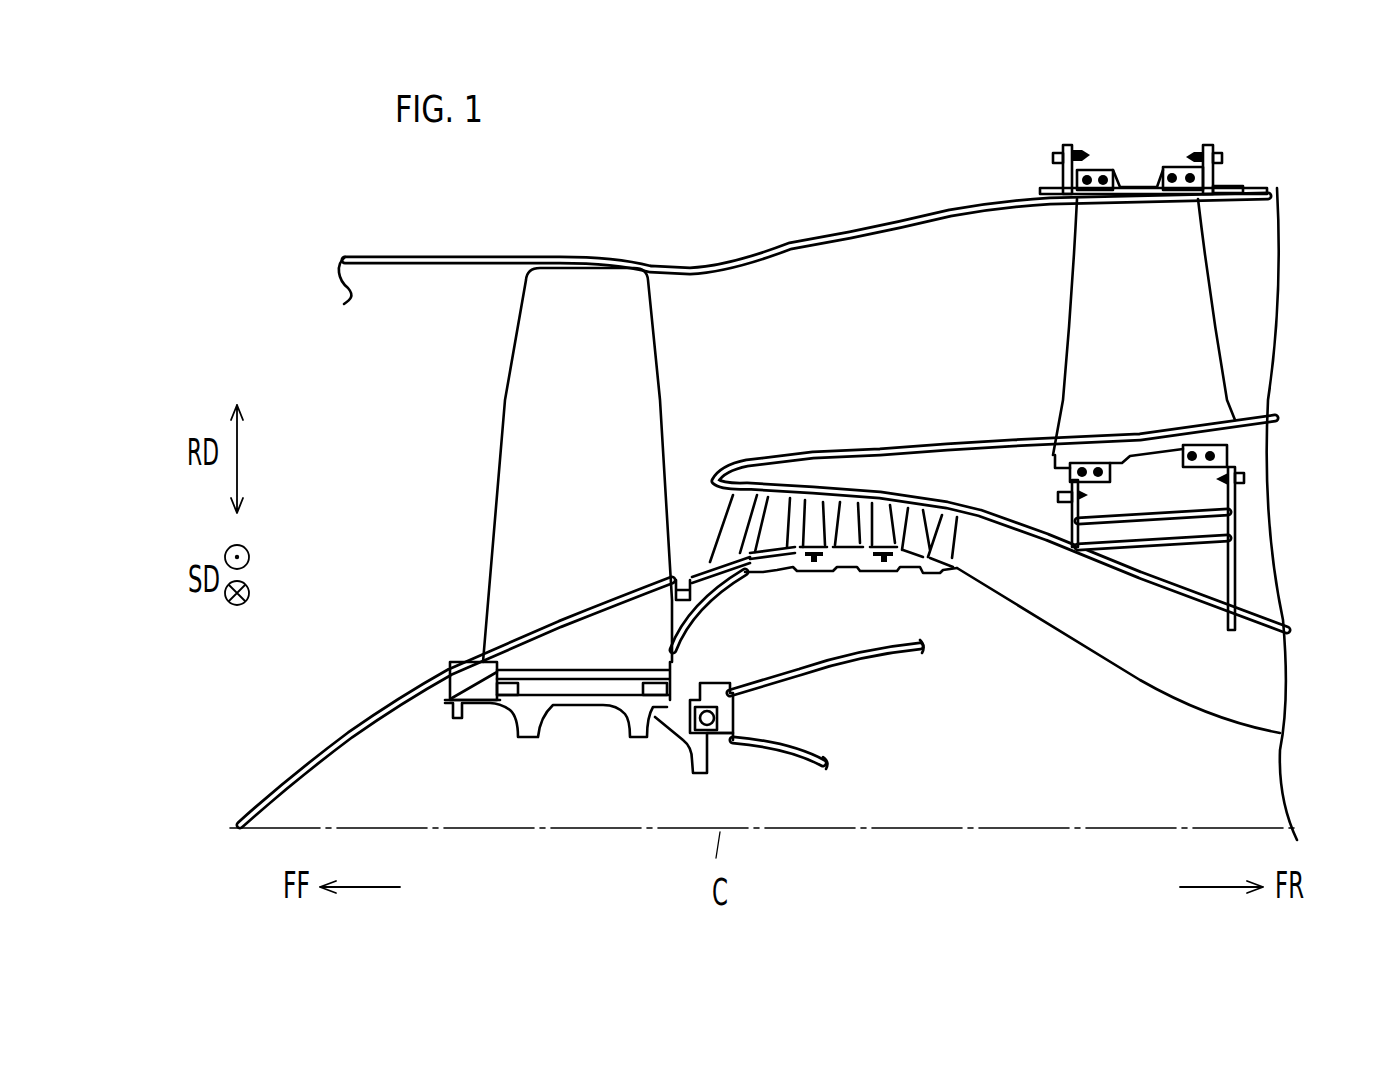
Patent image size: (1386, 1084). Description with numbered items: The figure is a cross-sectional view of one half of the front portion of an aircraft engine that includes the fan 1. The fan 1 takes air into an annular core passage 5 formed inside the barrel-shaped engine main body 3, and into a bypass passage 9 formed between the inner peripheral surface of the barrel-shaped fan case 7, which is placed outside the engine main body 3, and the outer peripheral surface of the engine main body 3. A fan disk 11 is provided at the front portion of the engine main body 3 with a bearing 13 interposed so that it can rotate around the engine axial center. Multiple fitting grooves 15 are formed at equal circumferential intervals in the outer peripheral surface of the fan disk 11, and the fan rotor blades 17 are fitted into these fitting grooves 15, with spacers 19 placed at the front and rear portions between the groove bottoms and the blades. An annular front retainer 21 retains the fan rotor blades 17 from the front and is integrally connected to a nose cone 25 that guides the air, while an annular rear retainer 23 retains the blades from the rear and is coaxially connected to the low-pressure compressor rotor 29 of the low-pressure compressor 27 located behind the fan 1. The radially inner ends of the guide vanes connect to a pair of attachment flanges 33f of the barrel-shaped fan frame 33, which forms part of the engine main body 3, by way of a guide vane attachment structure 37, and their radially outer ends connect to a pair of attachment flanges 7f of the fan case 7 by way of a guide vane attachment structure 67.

The fan 1 is at (399, 500).
The engine main body 3 is at (1000, 440).
The annular core passage 5 is at (993, 583).
The fan case 7 is at (875, 217).
The attachment flanges 7f is at (1062, 178).
The bypass passage 9 is at (963, 260).
The fan disk 11 is at (529, 754).
The bearing 13 is at (715, 720).
The fitting grooves 15 is at (580, 688).
The fan rotor blades 17 is at (493, 439).
The spacers 19 is at (505, 695).
The front retainer 21 is at (440, 677).
The rear retainer 23 is at (673, 657).
The nose cone 25 is at (325, 745).
The low-pressure compressor 27 is at (896, 490).
The low-pressure compressor rotor 29 is at (776, 575).
The fan frame 33 is at (1250, 573).
The attachment flanges 33f is at (1068, 497).
The guide vane attachment structure 37 is at (1141, 496).
The guide vane attachment structure 67 is at (1148, 150).